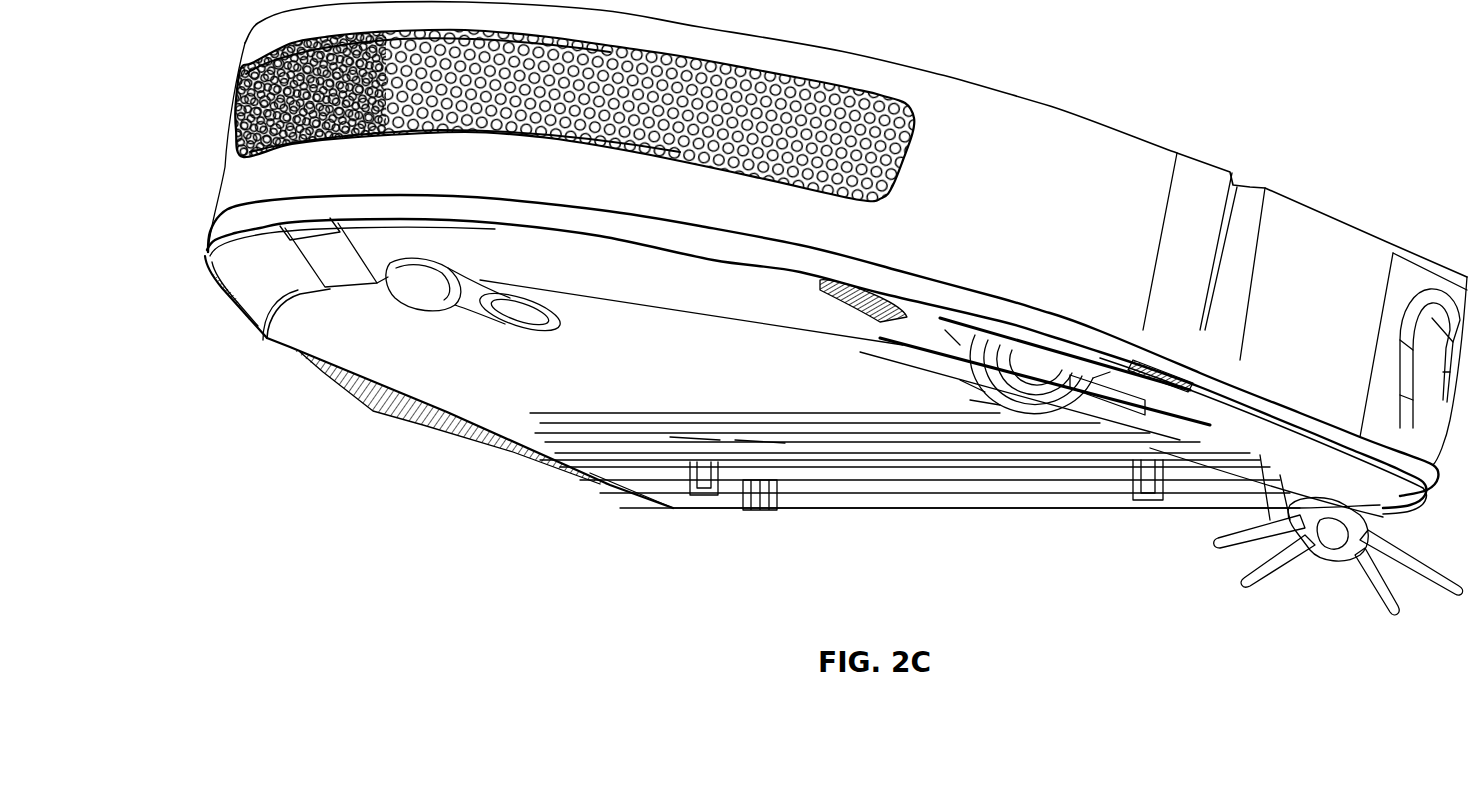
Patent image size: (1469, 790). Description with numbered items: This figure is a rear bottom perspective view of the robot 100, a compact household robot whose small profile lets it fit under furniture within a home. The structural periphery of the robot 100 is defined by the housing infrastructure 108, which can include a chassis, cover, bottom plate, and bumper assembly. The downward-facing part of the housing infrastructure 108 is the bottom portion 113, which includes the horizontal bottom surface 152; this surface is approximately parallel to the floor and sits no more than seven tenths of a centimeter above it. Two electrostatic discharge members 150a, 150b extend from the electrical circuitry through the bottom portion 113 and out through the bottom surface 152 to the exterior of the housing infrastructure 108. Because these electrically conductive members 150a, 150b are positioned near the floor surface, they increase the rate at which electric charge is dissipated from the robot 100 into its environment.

The robot 100 is at (1222, 138).
The housing infrastructure 108 is at (196, 257).
The bottom portion 113 is at (175, 394).
The horizontal bottom surface 152 is at (275, 338).
The electrostatic discharge member 150a is at (687, 437).
The electrostatic discharge member 150b is at (747, 440).